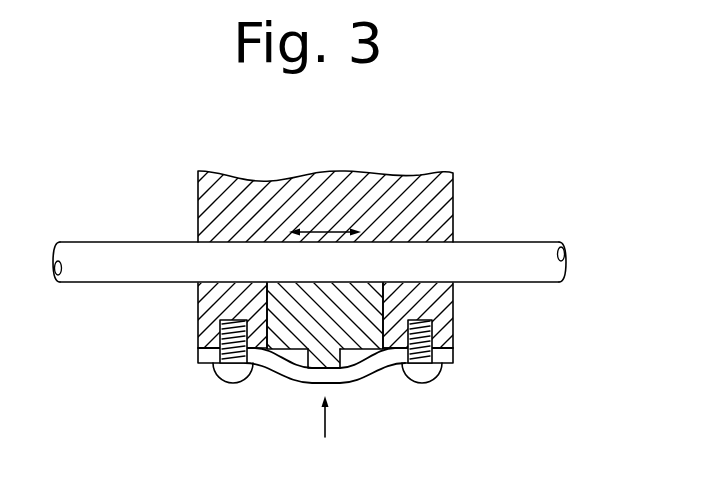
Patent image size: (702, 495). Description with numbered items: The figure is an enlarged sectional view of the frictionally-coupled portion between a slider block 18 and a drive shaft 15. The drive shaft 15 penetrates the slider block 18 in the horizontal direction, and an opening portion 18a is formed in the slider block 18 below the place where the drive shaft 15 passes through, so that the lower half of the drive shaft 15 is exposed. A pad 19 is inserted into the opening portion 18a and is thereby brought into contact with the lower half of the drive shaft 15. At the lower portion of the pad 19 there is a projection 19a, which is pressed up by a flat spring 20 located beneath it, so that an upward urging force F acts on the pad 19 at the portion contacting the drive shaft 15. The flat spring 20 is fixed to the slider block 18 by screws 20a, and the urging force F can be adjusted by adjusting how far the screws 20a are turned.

The drive shaft 15 is at (97, 282).
The slider block 18 is at (211, 205).
The opening portion 18a is at (378, 333).
The pad 19 is at (361, 354).
The projection 19a is at (309, 379).
The flat spring 20 is at (284, 367).
The screws 20a is at (227, 376).
The urging force F is at (323, 434).